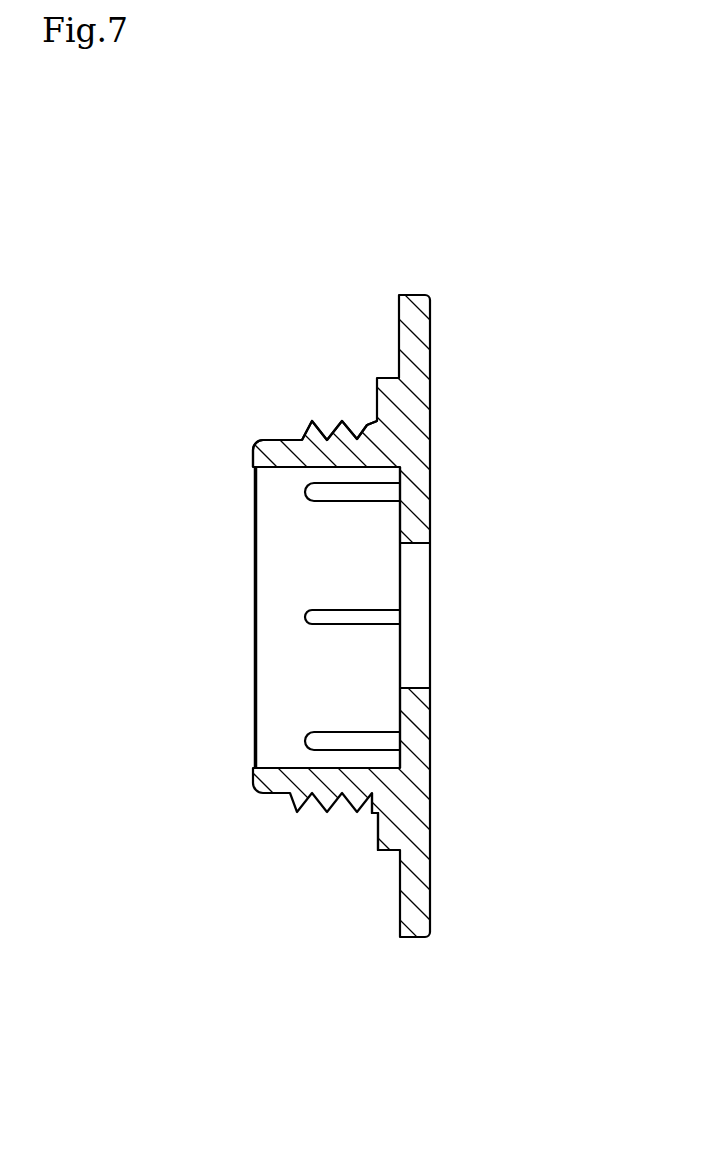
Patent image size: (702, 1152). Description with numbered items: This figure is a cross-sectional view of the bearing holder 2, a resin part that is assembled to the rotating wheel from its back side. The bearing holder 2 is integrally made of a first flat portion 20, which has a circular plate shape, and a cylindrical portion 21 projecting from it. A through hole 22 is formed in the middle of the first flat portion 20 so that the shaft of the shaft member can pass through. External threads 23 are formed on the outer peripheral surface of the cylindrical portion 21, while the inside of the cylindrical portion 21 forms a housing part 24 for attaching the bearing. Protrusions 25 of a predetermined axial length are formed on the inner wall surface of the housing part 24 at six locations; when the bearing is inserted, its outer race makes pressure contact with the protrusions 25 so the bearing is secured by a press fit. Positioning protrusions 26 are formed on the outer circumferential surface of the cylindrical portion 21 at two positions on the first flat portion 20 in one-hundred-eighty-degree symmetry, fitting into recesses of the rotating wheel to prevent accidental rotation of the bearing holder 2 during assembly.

The bearing holder 2 is at (342, 242).
The first flat portion 20 is at (413, 297).
The cylindrical portion 21 is at (263, 441).
The through hole 22 is at (413, 545).
The external threads 23 is at (312, 420).
The housing part 24 is at (272, 673).
The protrusions 25 is at (308, 742).
The positioning protrusions 26 is at (378, 840).